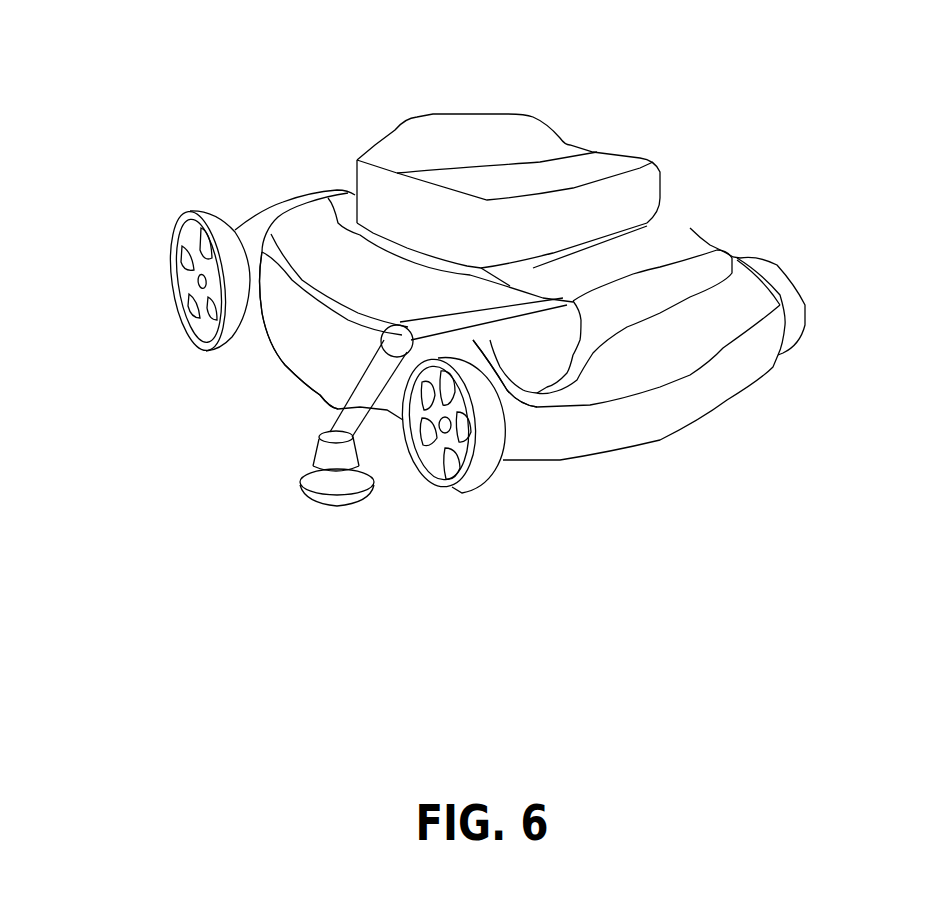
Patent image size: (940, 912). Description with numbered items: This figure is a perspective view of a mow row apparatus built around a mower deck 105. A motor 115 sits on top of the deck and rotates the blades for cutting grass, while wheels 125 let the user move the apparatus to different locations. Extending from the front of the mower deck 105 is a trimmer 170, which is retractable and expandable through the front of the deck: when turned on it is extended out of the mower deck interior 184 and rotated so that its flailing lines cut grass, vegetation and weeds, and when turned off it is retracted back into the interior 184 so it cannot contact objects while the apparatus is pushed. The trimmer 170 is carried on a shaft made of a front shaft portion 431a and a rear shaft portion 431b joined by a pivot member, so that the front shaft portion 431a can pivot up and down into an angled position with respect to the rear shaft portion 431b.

The mower deck 105 is at (647, 340).
The motor 115 is at (490, 135).
The wheels 125 is at (210, 218).
The trimmer 170 is at (305, 497).
The mower deck interior 184 is at (542, 325).
The front shaft portion 431a is at (337, 414).
The rear shaft portion 431b is at (522, 452).